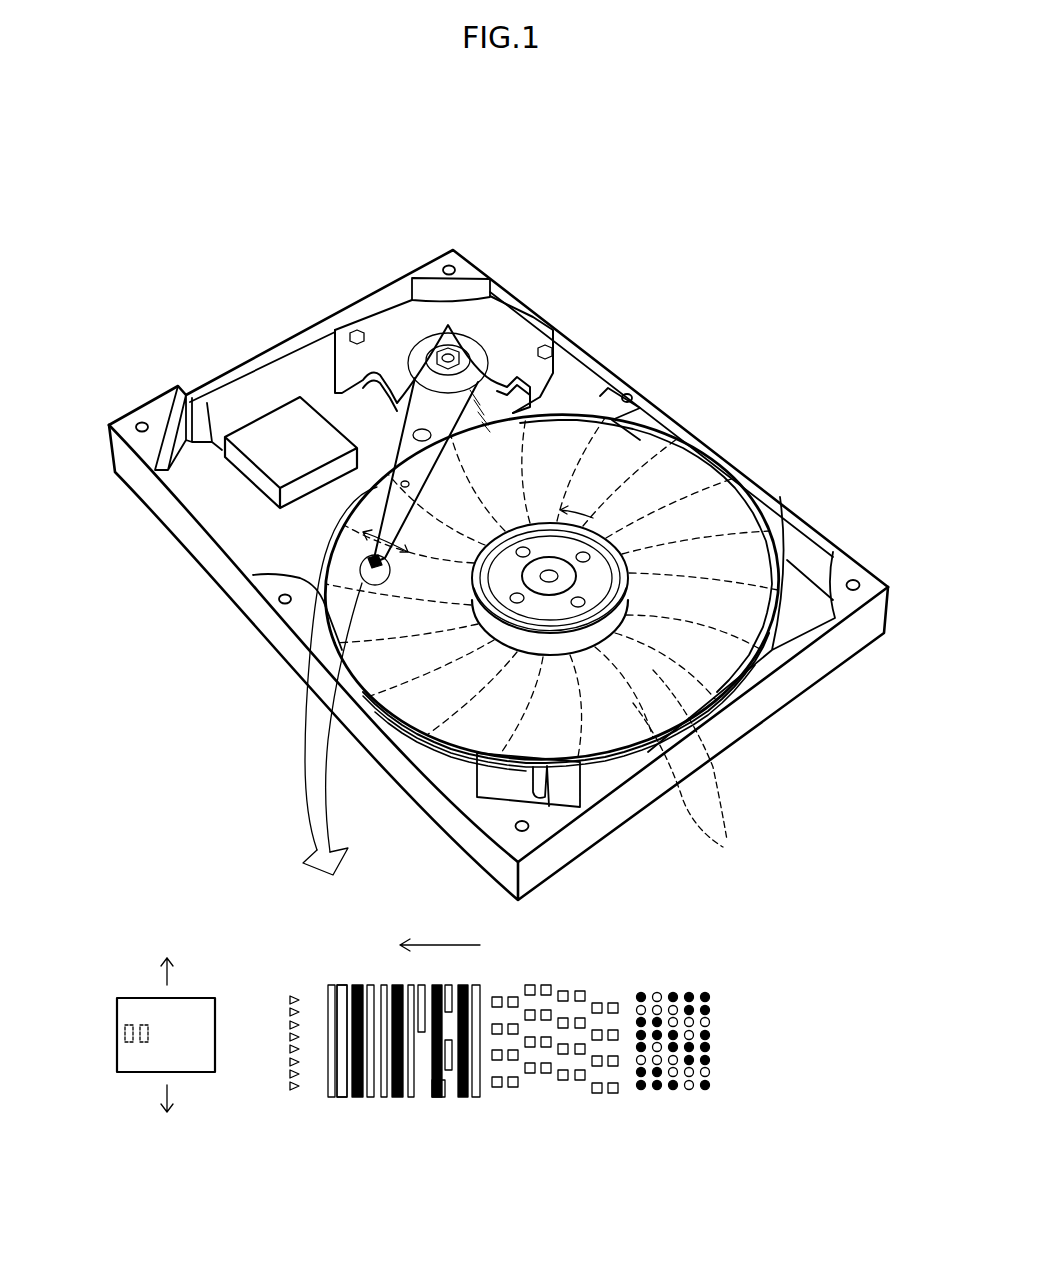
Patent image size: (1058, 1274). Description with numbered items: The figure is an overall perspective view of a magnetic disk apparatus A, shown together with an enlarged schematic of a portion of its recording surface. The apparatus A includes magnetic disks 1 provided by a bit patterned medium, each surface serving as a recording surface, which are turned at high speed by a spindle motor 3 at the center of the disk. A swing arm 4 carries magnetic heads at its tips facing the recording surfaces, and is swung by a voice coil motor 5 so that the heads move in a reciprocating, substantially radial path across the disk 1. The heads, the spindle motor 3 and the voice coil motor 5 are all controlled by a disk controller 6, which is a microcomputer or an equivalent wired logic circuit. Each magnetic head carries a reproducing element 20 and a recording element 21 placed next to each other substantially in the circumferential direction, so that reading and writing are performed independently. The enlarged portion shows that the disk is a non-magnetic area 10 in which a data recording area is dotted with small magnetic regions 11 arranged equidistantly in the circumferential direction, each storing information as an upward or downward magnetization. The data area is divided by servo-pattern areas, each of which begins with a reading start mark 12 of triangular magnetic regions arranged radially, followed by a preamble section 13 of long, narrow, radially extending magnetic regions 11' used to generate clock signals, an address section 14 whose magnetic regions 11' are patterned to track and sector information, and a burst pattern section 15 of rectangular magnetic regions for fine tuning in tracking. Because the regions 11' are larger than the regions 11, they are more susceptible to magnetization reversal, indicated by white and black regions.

The magnetic disk apparatus A is at (435, 190).
The magnetic disk 1 is at (688, 468).
The spindle motor 3 is at (590, 573).
The swing arm 4 is at (417, 455).
The voice coil motor 5 is at (487, 322).
The disk controller 6 is at (277, 453).
The non-magnetic area 10 is at (499, 1199).
The magnetic region 11 is at (677, 1090).
The magnetic region 11' is at (323, 1085).
The reading start mark 12 is at (295, 1087).
The preamble section 13 is at (415, 1105).
The address section 14 is at (482, 1105).
The burst pattern section 15 is at (625, 1105).
The reproducing element 20 is at (148, 1020).
The recording element 21 is at (130, 1023).